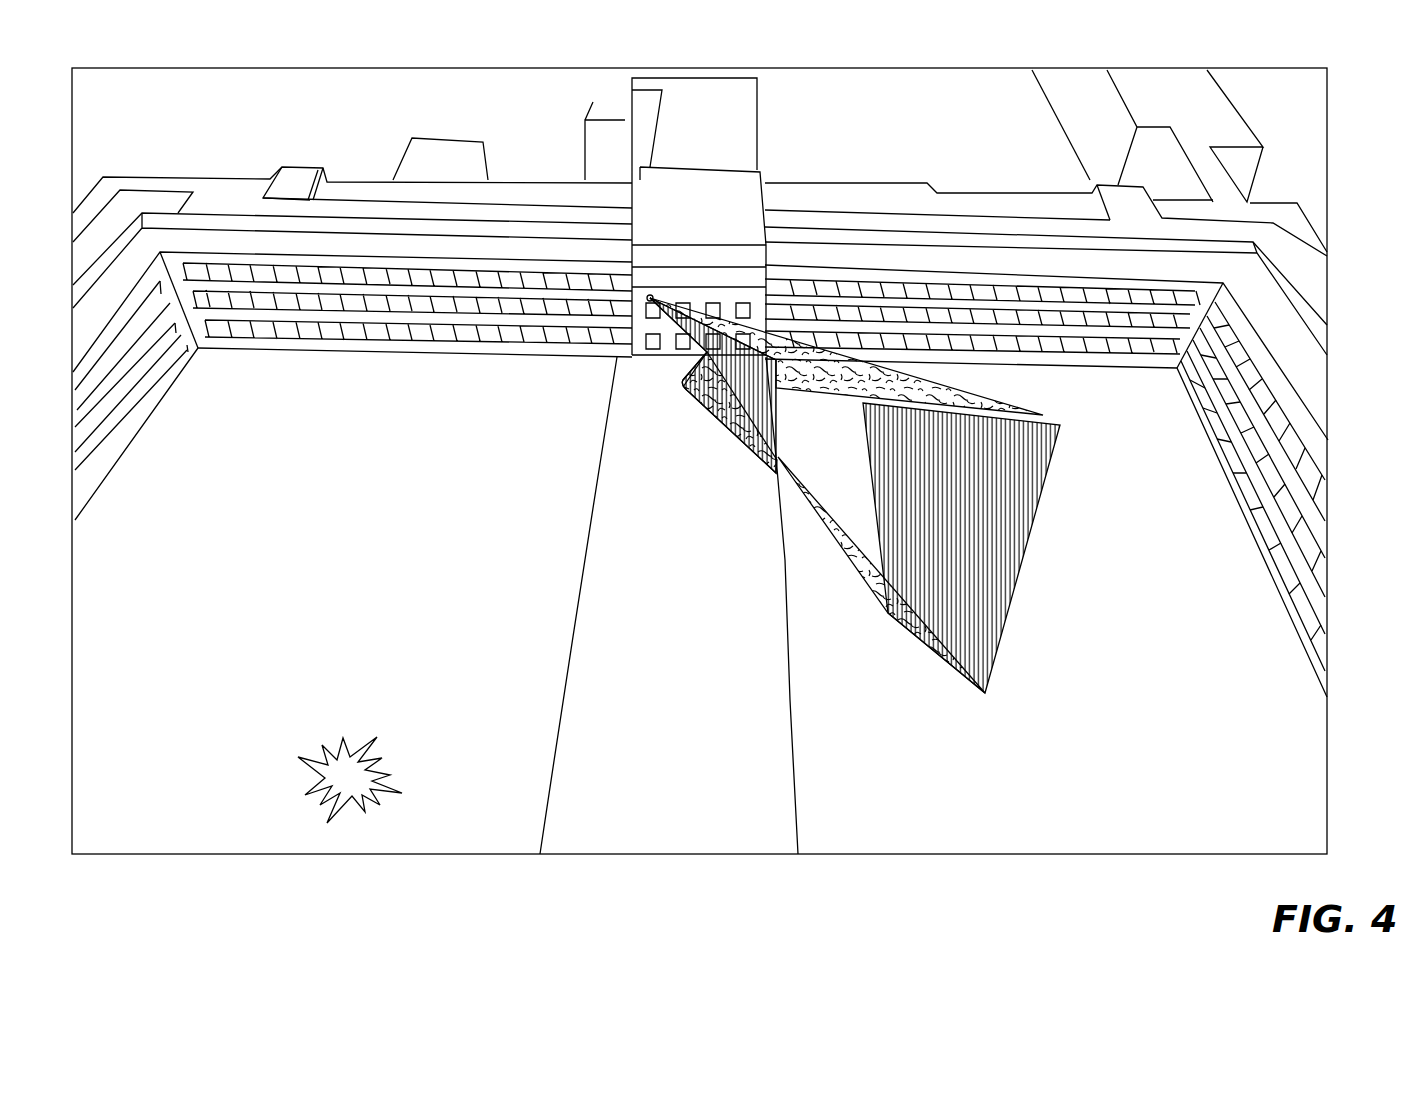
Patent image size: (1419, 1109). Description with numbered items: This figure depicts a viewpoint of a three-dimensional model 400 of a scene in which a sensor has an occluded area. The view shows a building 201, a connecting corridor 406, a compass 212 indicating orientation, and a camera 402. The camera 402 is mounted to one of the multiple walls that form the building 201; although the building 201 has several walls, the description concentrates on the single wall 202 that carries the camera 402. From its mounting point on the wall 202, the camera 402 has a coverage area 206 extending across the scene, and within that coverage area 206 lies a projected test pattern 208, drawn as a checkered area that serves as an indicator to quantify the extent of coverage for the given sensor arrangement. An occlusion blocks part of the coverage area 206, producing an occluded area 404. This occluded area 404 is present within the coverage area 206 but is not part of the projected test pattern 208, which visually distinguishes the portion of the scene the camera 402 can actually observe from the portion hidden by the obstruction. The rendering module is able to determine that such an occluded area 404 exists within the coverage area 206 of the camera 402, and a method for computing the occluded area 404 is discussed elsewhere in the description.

The 3D model 400 is at (345, 103).
The wall 202 is at (525, 270).
The camera 402 is at (650, 298).
The building 201 is at (702, 193).
The projected test pattern 208 is at (723, 400).
The coverage area 206 is at (840, 360).
The occluded area 404 is at (852, 562).
The connecting corridor 406 is at (733, 537).
The compass 212 is at (360, 808).